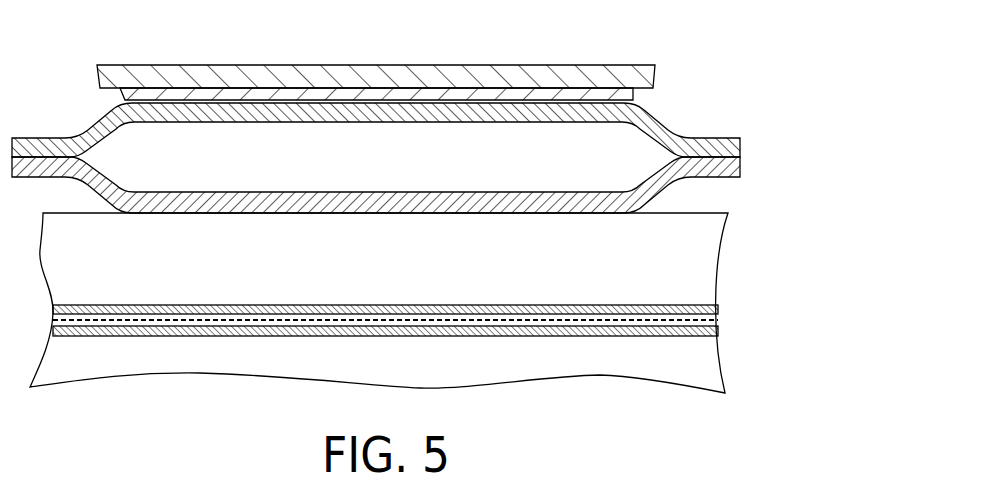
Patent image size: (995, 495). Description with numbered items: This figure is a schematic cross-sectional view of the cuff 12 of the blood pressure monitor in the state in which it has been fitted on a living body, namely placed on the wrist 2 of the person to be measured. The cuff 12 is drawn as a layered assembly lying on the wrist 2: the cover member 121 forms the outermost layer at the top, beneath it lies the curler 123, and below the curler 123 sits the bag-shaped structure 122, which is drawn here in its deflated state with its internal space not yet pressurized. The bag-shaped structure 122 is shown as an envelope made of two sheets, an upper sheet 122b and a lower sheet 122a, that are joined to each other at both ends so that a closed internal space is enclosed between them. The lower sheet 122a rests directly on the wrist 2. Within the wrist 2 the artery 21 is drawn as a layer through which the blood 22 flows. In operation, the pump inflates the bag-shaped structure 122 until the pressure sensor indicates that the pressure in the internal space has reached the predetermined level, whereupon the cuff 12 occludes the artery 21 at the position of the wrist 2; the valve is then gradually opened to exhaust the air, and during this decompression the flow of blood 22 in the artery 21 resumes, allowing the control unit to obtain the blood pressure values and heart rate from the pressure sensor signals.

The cuff 12 is at (447, 113).
The cover member 121 is at (578, 65).
The curler 123 is at (637, 94).
The bag-shaped structure 122 is at (447, 158).
The upper sheet of envelope 122b is at (745, 143).
The lower sheet of envelope 122a is at (744, 165).
The wrist 2 is at (410, 303).
The blood 22 is at (718, 318).
The artery 21 is at (718, 331).